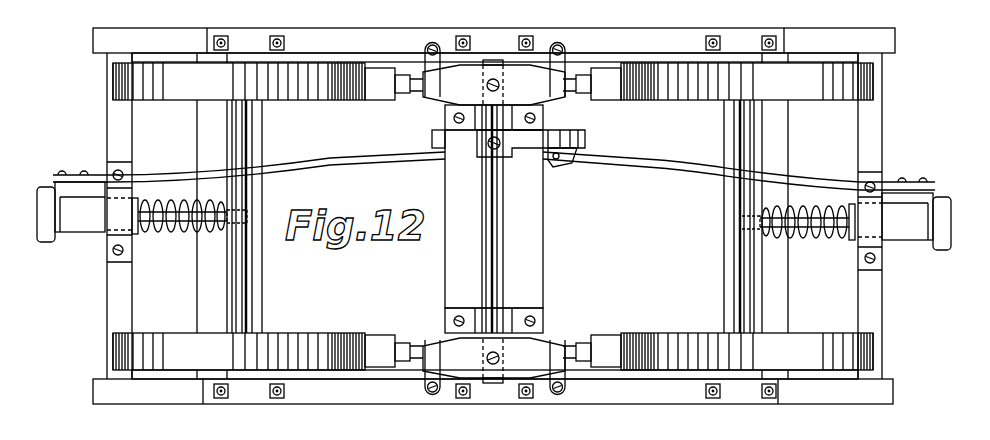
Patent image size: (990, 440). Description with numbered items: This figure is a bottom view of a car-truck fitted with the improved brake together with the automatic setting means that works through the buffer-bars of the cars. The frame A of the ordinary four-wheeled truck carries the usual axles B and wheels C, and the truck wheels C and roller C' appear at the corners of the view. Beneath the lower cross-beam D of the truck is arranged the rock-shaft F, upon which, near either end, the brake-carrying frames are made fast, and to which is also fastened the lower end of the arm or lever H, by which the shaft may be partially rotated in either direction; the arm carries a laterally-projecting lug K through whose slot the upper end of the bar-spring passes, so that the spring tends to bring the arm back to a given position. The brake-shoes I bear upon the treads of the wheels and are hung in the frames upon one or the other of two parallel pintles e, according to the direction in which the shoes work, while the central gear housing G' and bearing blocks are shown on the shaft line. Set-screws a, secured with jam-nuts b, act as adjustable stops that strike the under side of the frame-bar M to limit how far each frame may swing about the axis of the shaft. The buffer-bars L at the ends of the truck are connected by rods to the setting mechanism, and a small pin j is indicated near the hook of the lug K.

The frame A is at (505, 234).
The axles B is at (242, 273).
The wheels C is at (493, 216).
The roller C' is at (239, 81).
The lower cross-beam D is at (503, 250).
The rock-shaft F is at (488, 219).
The gear housing G' is at (494, 221).
The arm or lever H is at (555, 127).
The brake-shoes I is at (493, 218).
The laterally-projecting lug K is at (580, 151).
The buffer-bars L is at (494, 216).
The frame-bar M is at (490, 215).
The set-screws a is at (492, 216).
The jam-nuts b is at (494, 219).
The pintles or arbors e is at (494, 336).
The pin j is at (564, 159).